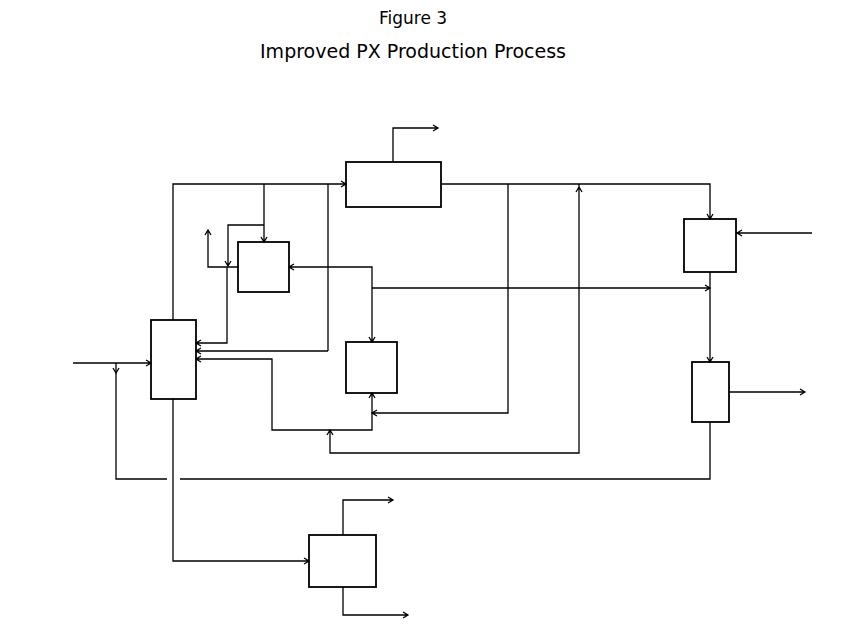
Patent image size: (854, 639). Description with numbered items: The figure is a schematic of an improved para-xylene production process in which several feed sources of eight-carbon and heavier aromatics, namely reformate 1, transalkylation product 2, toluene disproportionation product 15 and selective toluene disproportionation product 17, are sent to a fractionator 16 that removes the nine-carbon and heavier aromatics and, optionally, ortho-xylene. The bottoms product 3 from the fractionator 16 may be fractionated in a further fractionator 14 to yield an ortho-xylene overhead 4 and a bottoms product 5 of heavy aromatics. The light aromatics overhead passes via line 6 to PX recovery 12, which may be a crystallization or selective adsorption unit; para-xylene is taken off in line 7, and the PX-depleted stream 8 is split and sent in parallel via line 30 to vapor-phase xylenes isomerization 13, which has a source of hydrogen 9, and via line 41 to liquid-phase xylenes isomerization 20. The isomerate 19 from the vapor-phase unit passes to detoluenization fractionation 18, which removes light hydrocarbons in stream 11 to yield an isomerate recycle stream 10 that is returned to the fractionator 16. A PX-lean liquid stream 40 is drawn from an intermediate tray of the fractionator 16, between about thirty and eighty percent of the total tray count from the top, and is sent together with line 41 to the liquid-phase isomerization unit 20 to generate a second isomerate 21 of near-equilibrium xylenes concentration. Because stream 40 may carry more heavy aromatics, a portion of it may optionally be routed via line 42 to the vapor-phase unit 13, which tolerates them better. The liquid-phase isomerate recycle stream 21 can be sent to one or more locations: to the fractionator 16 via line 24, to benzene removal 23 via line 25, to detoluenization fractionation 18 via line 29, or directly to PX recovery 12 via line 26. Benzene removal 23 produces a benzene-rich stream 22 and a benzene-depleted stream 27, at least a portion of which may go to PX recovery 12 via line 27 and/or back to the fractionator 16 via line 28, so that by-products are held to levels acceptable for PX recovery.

The C8+ reformate 1 is at (86, 350).
The C8+ transalkylation product 2 is at (86, 350).
The C8+ toluene disproportionation product 15 is at (86, 350).
The C8+ selective toluene disproportionation product 17 is at (86, 350).
The bottoms product 3 is at (241, 481).
The OX overhead 4 is at (376, 516).
The C9+ bottoms 5 is at (388, 608).
The line 6 is at (259, 240).
The PX line 7 is at (426, 140).
The PX-depleted stream 8 is at (474, 172).
The source of hydrogen 9 is at (774, 221).
The isomerate recycle stream 10 is at (413, 421).
The C7- hydrocarbons stream 11 is at (767, 380).
The PX recovery 12 is at (393, 184).
The vapor-phase xylenes isomerization unit 13 is at (710, 245).
The fractionator 14 is at (342, 561).
The fractionator 16 is at (173, 359).
The detoluenization fractionation 18 is at (710, 392).
The isomerate 19 is at (724, 317).
The liquid-phase xylenes isomerization unit 20 is at (371, 367).
The second isomerate 21 is at (385, 315).
The benzene-rich stream 22 is at (213, 238).
The benzene removal 23 is at (263, 267).
The line 24 is at (262, 343).
The line 25 is at (330, 277).
The line 26 is at (341, 267).
The benzene-depleted stream 27 is at (259, 225).
The line 28 is at (226, 306).
The line 29 is at (541, 278).
The line 30 is at (610, 189).
The PX-lean liquid stream 40 is at (285, 393).
The line 41 is at (454, 300).
The line 42 is at (454, 318).